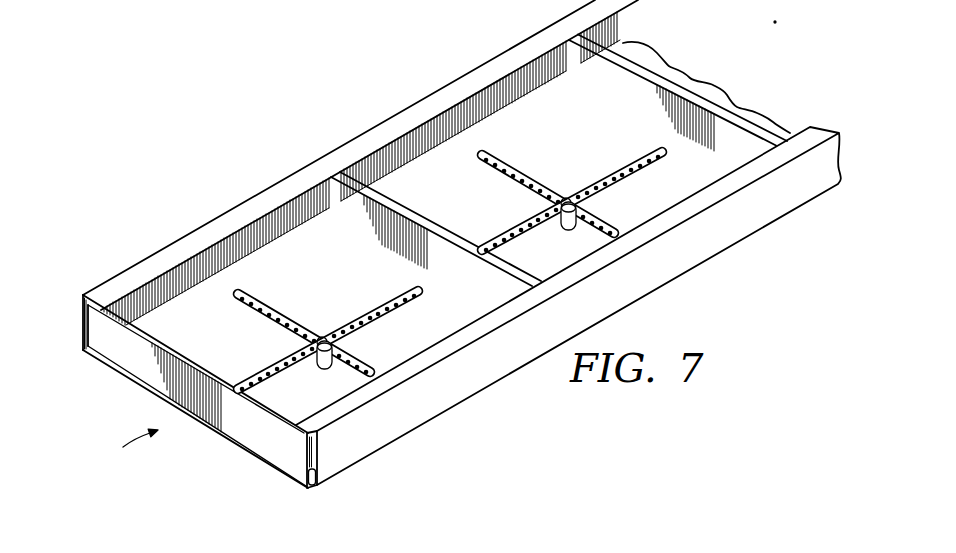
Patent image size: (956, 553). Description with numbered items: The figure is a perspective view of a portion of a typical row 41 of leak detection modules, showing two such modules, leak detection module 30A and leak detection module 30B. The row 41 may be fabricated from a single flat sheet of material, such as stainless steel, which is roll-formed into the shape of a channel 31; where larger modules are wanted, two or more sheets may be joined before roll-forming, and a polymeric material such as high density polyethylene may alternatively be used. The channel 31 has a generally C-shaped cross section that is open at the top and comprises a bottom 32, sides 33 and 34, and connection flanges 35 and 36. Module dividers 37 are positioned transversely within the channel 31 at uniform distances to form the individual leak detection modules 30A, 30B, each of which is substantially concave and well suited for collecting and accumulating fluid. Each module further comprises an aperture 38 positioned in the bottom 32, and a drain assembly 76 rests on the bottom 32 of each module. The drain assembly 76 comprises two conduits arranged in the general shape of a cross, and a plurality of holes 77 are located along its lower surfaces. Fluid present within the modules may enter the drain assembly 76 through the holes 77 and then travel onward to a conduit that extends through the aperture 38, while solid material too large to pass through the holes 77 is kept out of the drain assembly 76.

The leak detection module 30A is at (322, 313).
The leak detection module 30B is at (566, 172).
The channel 31 is at (82, 335).
The bottom 32 is at (143, 383).
The side 33 is at (82, 312).
The side 34 is at (310, 467).
The connection flange 35 is at (326, 166).
The connection flange 36 is at (818, 133).
The module divider 37 is at (360, 210).
The aperture 38 is at (309, 342).
The row 41 is at (128, 456).
The drain assembly 76 is at (450, 250).
The hole 77 is at (348, 362).